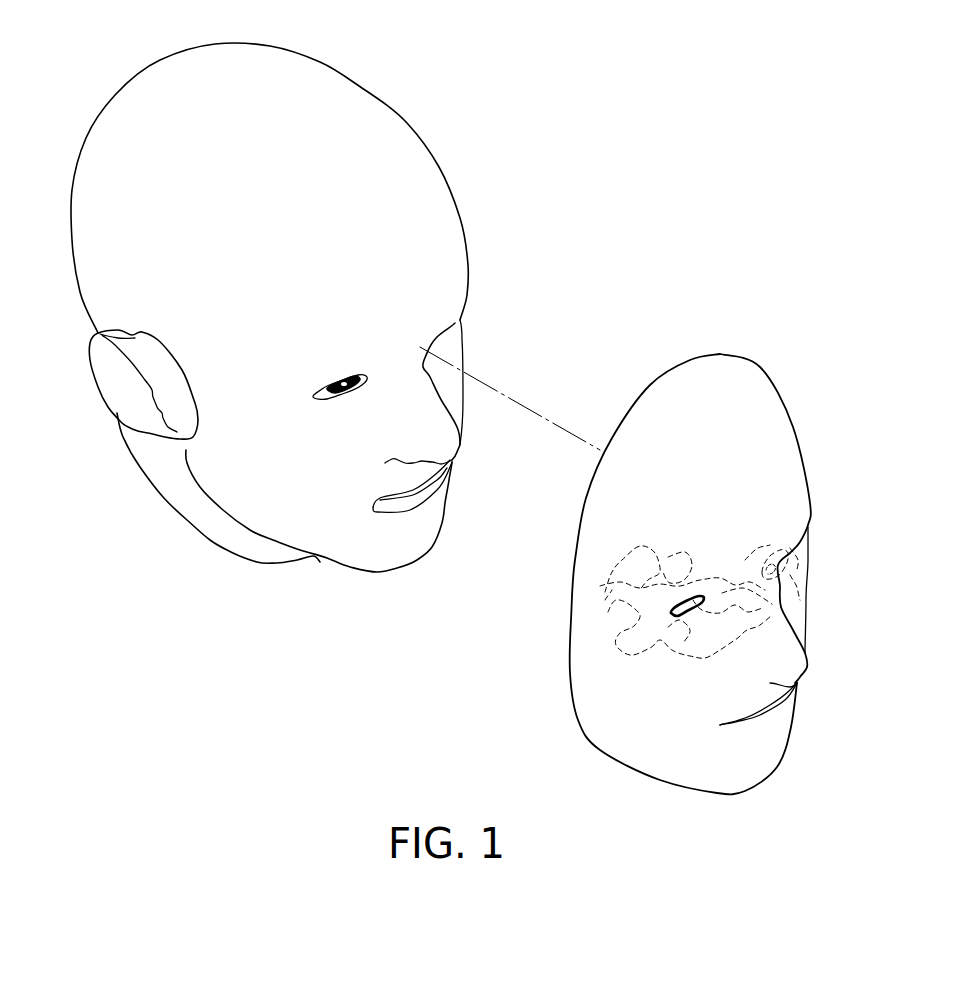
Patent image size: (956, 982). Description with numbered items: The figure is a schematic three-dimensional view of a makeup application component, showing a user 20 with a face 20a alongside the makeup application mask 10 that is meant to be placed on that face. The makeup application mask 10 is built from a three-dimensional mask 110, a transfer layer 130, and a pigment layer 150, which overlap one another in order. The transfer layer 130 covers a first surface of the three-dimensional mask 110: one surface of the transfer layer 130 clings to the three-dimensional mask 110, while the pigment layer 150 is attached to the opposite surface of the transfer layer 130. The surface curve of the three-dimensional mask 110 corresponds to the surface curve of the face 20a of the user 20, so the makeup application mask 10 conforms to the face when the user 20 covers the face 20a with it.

The makeup application mask 10 is at (602, 574).
The user 20 is at (352, 83).
The face 20a is at (372, 268).
The three-dimensional mask 110 is at (598, 693).
The transfer layer 130 is at (582, 647).
The pigment layer 150 is at (605, 585).